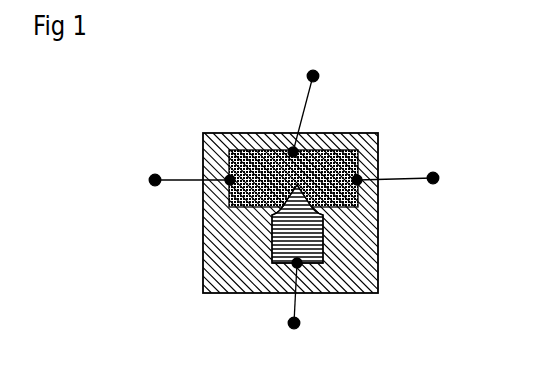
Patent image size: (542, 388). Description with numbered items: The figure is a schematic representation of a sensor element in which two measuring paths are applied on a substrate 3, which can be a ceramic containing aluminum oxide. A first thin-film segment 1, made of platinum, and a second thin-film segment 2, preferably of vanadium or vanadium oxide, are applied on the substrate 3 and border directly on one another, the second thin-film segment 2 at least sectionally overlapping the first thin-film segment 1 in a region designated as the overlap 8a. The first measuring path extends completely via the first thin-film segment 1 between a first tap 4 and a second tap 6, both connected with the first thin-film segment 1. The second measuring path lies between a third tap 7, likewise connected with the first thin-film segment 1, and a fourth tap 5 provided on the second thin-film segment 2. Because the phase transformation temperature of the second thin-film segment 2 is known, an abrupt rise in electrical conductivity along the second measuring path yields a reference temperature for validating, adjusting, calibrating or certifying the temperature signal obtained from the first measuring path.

The first thin-film segment 1 is at (235, 207).
The second thin-film segment 2 is at (272, 231).
The substrate 3 is at (218, 237).
The first tap 4 is at (433, 178).
The fourth tap 5 is at (294, 323).
The second tap 6 is at (155, 180).
The third tap 7 is at (313, 76).
The overlap 8a is at (310, 208).